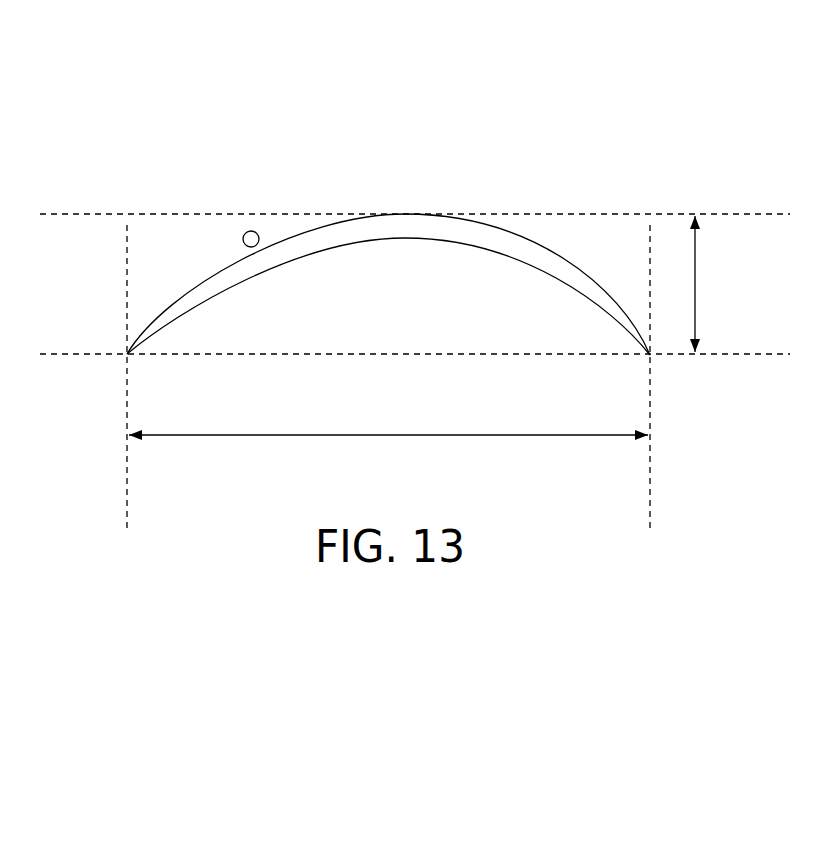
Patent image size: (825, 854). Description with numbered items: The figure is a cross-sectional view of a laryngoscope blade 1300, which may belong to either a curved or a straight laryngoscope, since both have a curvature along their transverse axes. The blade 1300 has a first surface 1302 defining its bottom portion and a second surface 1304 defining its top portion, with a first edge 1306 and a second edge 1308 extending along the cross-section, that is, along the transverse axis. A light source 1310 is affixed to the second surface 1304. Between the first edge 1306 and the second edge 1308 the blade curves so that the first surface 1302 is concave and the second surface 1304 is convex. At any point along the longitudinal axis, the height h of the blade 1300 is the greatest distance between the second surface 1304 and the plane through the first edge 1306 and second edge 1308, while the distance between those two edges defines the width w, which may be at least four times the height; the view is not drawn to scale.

The blade 1300 is at (384, 108).
The first surface 1302 is at (452, 241).
The second surface 1304 is at (517, 231).
The first edge 1306 is at (126, 356).
The second edge 1308 is at (651, 356).
The light source 1310 is at (248, 230).